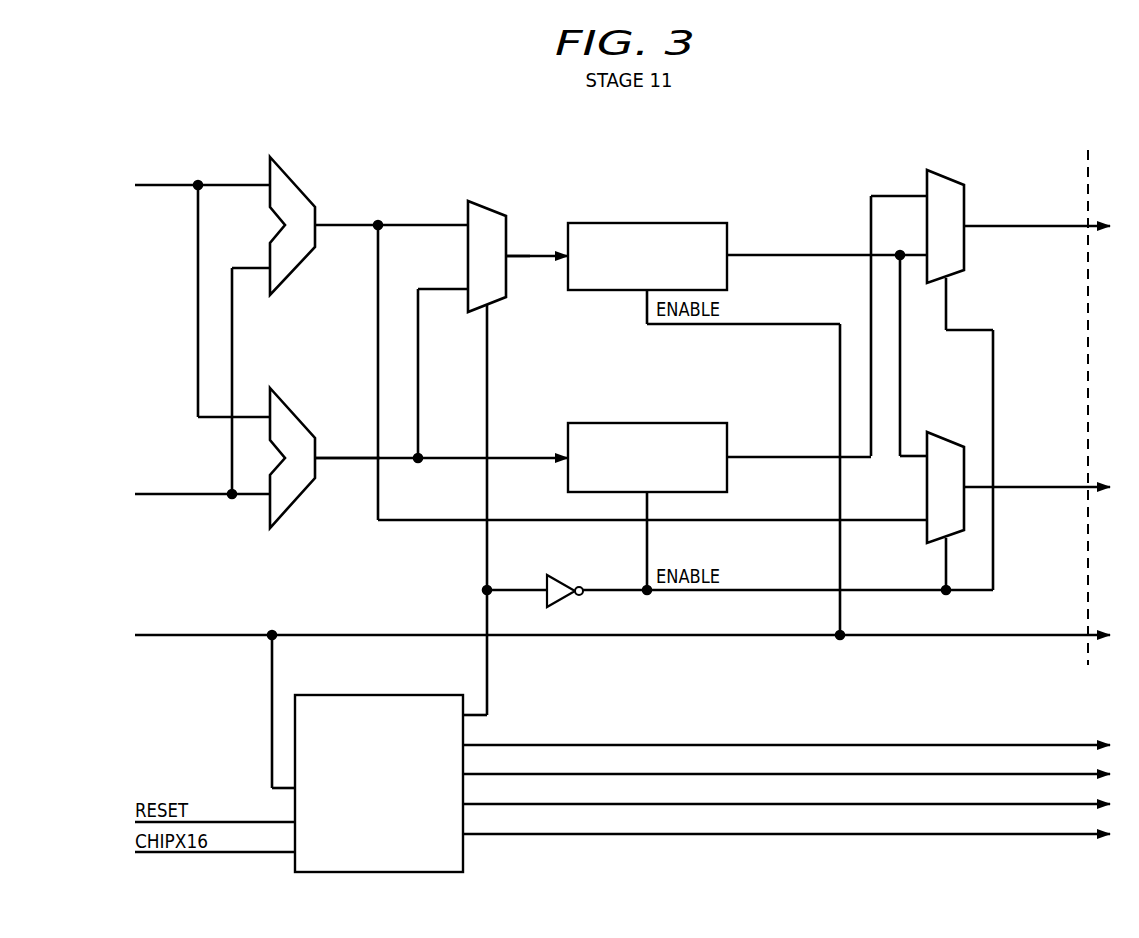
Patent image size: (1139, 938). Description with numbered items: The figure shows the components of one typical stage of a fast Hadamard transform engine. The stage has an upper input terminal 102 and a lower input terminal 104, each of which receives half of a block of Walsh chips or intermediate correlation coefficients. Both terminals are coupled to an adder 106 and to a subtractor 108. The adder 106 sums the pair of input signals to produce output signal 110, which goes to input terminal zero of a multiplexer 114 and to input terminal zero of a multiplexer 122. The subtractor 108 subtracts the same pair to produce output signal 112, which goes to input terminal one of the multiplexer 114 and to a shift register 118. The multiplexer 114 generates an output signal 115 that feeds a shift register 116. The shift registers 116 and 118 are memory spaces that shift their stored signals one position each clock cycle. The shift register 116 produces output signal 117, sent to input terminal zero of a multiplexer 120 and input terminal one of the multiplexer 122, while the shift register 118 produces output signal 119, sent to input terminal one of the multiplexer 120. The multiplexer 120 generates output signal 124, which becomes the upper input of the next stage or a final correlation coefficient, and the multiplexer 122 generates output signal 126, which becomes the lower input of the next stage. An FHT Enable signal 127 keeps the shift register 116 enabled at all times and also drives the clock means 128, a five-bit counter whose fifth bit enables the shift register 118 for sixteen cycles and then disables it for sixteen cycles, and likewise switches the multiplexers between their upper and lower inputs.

The upper input terminal 102 is at (155, 188).
The lower input terminal 104 is at (153, 497).
The adder 106 is at (294, 166).
The subtractor 108 is at (288, 400).
The output signal 110 is at (339, 222).
The output signal 112 is at (339, 449).
The multiplexer 114 is at (488, 210).
The output signal 115 is at (534, 253).
The shift register 116 is at (648, 222).
The output signal 117 is at (764, 253).
The shift register 118 is at (648, 421).
The output signal 119 is at (764, 456).
The multiplexer 120 is at (946, 170).
The multiplexer 122 is at (946, 432).
The output signal 124 is at (1052, 224).
The output signal 126 is at (1064, 485).
The FHT Enable signal 127 is at (622, 697).
The clock means 128 is at (355, 694).